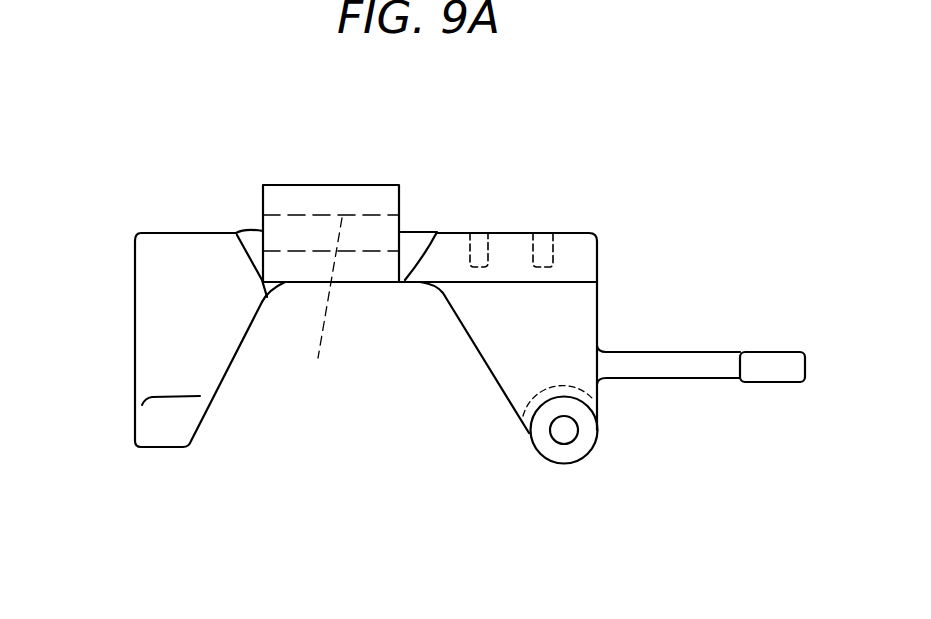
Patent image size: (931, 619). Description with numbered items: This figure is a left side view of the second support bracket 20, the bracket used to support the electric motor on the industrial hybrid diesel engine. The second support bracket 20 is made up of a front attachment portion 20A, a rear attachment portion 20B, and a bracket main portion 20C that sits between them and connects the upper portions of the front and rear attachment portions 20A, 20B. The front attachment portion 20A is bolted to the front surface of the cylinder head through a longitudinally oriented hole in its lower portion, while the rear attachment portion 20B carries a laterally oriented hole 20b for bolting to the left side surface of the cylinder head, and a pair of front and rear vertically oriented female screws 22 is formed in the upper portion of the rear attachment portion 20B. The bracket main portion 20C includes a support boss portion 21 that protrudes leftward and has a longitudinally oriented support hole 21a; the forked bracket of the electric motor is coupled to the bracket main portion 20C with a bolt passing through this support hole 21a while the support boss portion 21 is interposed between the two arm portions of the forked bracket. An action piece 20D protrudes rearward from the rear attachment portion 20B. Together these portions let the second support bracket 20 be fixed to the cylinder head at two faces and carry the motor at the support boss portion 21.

The second support bracket 20 is at (508, 190).
The front attachment portion 20A is at (162, 355).
The rear attachment portion 20B is at (508, 370).
The bracket main portion 20C is at (336, 194).
The action piece 20D is at (727, 360).
The laterally oriented hole 20b is at (567, 437).
The support boss portion 21 is at (315, 198).
The support hole 21a is at (321, 308).
The female screws 22 is at (478, 243).